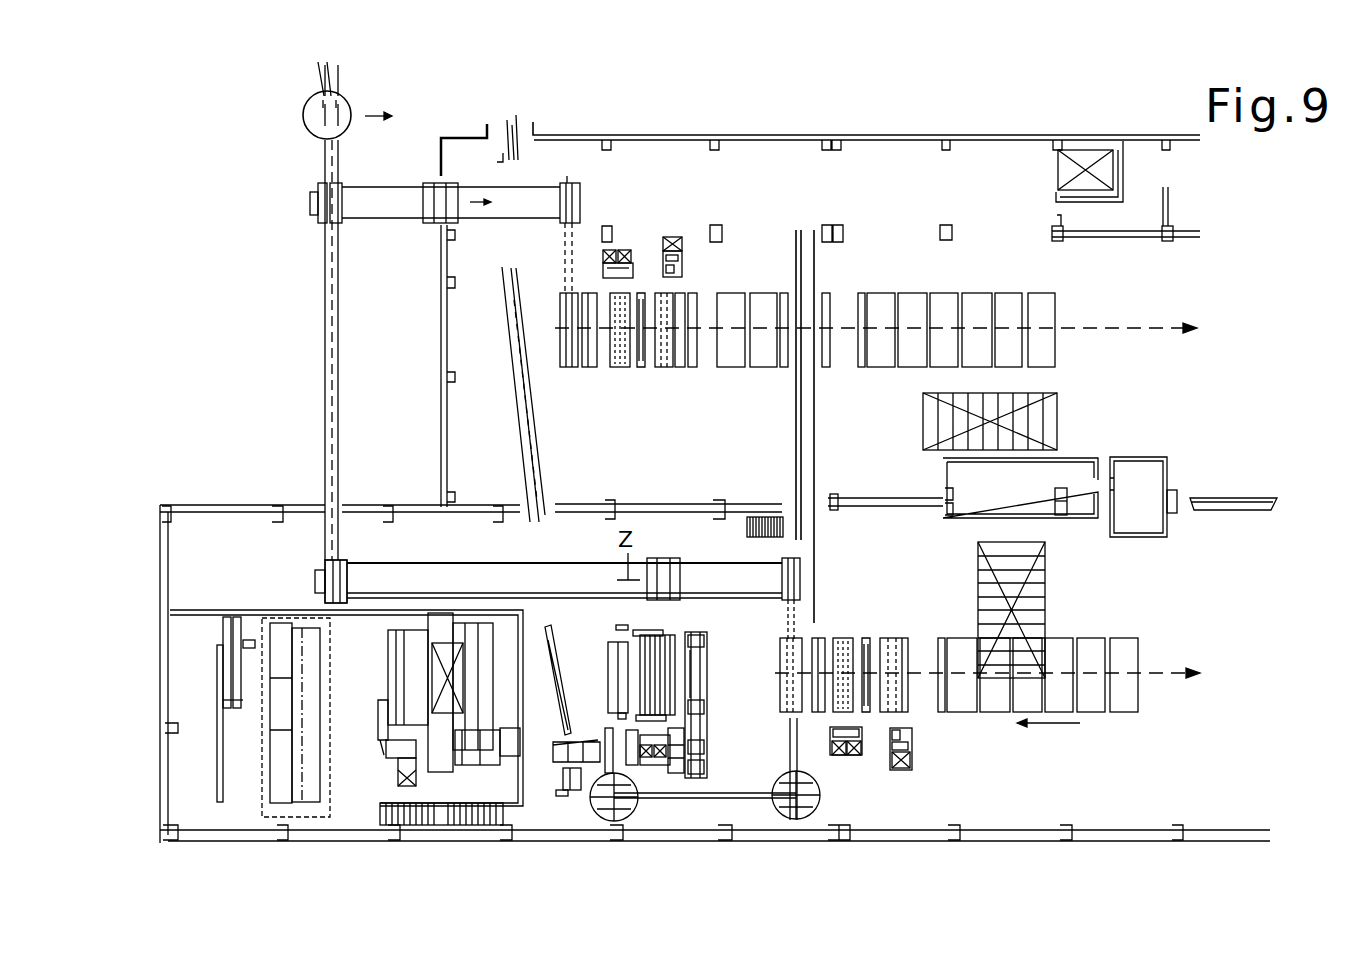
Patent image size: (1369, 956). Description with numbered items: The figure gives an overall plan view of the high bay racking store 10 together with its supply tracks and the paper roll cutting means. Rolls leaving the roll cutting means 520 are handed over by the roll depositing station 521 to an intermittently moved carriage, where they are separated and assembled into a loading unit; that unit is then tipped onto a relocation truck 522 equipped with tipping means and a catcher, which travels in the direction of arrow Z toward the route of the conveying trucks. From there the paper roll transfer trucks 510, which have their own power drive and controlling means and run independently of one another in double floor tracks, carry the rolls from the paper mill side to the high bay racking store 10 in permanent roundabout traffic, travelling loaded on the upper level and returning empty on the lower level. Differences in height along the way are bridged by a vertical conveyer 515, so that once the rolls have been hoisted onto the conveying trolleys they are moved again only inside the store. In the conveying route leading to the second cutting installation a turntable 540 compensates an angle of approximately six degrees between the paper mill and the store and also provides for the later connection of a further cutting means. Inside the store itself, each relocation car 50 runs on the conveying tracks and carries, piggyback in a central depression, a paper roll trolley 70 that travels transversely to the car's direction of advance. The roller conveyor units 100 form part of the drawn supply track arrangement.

The high bay racking store 10 is at (298, 77).
The turntable 540 is at (313, 115).
The relocation car 50 is at (352, 569).
The paper roll trolley 70 is at (553, 581).
The vertical conveyer 515 is at (318, 590).
The roll depositing station 521 is at (806, 575).
The relocation truck 522 is at (665, 600).
The paper roll transfer truck 510 is at (682, 614).
The roll cutting means 520 is at (922, 775).
The roller conveyor units 100 is at (1099, 629).